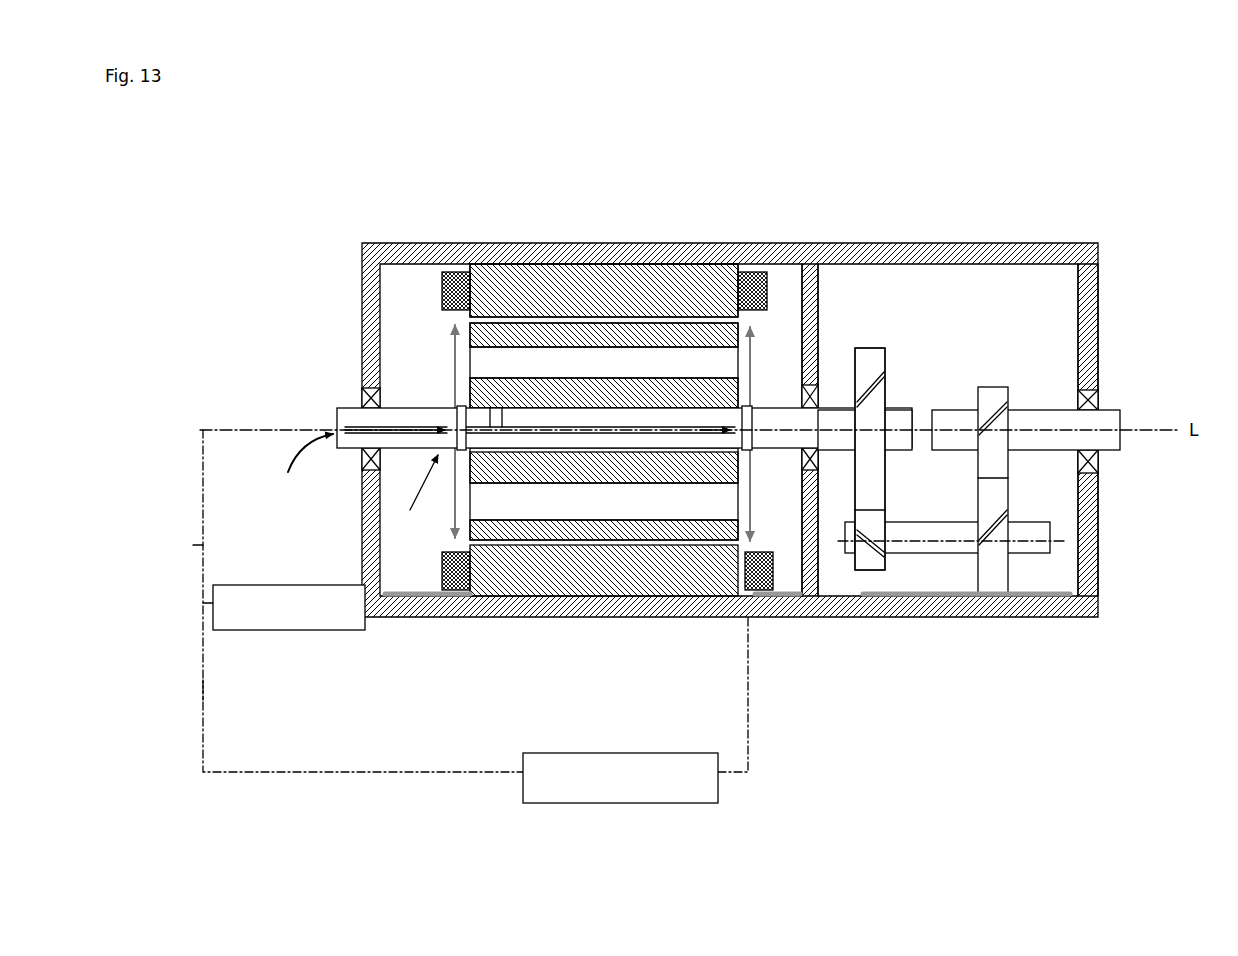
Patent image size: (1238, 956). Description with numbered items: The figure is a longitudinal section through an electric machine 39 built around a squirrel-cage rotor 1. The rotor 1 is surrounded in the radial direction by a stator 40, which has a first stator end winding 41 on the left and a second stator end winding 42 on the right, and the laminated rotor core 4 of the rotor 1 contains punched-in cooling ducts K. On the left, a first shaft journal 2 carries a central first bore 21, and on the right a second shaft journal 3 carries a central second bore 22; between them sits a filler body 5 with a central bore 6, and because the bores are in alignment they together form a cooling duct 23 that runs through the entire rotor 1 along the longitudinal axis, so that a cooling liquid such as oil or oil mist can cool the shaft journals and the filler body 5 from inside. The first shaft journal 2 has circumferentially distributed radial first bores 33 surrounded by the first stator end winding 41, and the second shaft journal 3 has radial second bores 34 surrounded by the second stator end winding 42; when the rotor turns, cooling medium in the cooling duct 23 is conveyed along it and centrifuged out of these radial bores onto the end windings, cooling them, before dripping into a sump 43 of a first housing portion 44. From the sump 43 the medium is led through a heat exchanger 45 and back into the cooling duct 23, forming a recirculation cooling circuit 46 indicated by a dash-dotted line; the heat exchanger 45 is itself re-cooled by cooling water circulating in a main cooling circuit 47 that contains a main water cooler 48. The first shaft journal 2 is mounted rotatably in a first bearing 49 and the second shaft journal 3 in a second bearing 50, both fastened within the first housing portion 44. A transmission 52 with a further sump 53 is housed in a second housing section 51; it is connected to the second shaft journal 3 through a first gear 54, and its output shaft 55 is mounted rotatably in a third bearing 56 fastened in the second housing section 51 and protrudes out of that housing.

The rotor 1 is at (421, 493).
The first shaft journal 2 is at (365, 415).
The second shaft journal 3 is at (833, 420).
The laminated rotor core 4 is at (465, 348).
The filler body 5 is at (712, 412).
The central bore 6 is at (495, 275).
The cooling ducts K is at (557, 497).
The first bore 21 is at (350, 428).
The second bore 22 is at (738, 437).
The cooling duct 23 is at (304, 465).
The radial first bores 33 is at (455, 410).
The radial second bores 34 is at (752, 425).
The electric machine 39 is at (1028, 157).
The stator 40 is at (625, 282).
The first stator end winding 41 is at (451, 283).
The second stator end winding 42 is at (760, 272).
The sump 43 is at (386, 597).
The first housing portion 44 is at (770, 617).
The heat exchanger 45 is at (262, 605).
The recirculation cooling circuit 46 is at (203, 545).
The main cooling circuit 47 is at (203, 688).
The main water cooler 48 is at (582, 768).
The first bearing 49 is at (363, 466).
The second bearing 50 is at (805, 465).
The second housing section 51 is at (896, 617).
The transmission 52 is at (935, 378).
The further sump 53 is at (1030, 595).
The first gear 54 is at (872, 362).
The output shaft 55 is at (1113, 400).
The third bearing 56 is at (1098, 465).